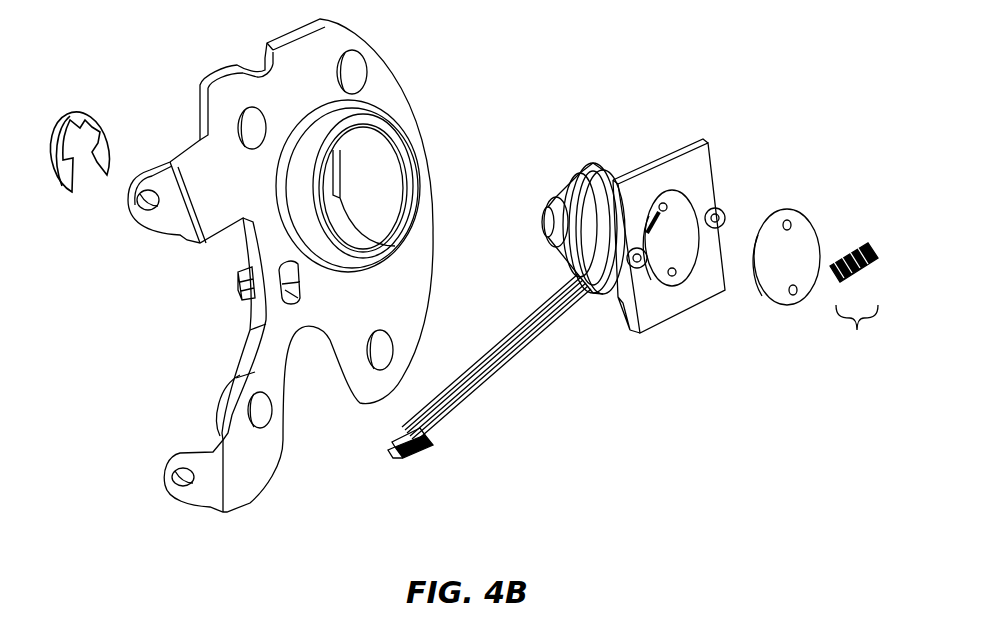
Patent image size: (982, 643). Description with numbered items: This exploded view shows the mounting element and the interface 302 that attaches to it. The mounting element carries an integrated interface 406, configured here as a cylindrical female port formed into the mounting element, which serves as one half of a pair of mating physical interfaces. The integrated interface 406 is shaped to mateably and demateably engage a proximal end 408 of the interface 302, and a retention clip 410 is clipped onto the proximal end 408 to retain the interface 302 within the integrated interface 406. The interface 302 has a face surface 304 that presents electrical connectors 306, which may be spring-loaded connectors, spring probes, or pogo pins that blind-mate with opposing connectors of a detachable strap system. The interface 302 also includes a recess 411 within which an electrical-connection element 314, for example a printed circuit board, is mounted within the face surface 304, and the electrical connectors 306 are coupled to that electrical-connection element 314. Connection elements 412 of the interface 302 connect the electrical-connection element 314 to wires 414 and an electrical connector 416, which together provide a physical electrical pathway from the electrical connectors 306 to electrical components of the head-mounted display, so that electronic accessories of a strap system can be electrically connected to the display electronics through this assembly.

The interface 302 is at (713, 168).
The face surface 304 is at (710, 272).
The electrical connectors 306 is at (854, 306).
The electrical-connection element 314 is at (790, 210).
The integrated interface 406 is at (378, 183).
The proximal end 408 is at (555, 237).
The retention clip 410 is at (82, 107).
The recess 411 is at (681, 283).
The connection elements 412 is at (645, 245).
The wires 414 is at (485, 377).
The electrical connector 416 is at (413, 460).